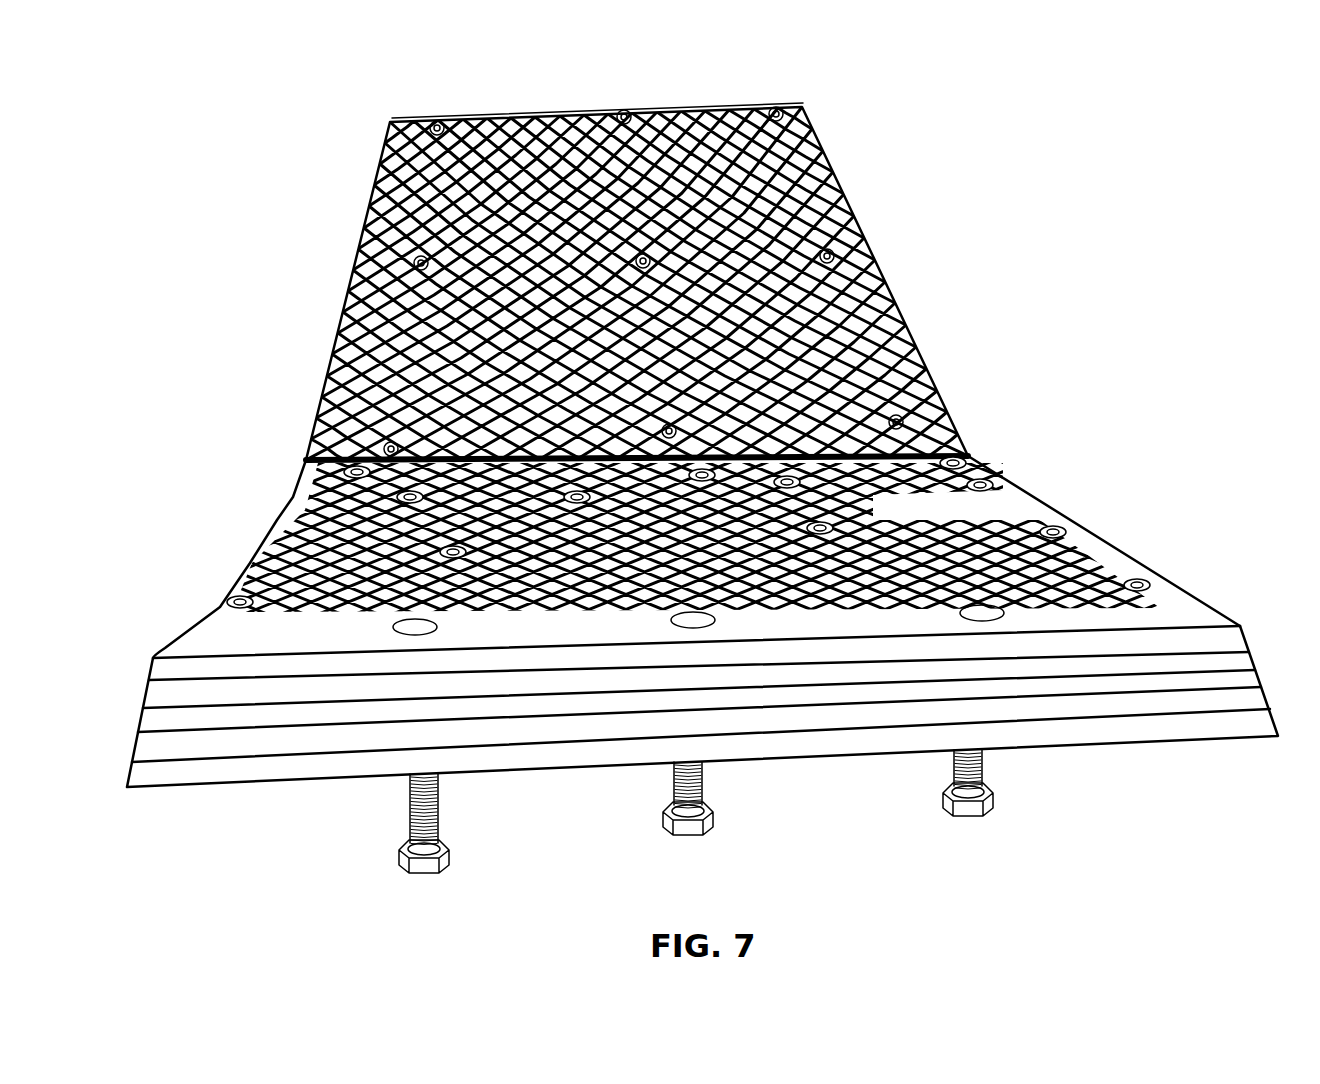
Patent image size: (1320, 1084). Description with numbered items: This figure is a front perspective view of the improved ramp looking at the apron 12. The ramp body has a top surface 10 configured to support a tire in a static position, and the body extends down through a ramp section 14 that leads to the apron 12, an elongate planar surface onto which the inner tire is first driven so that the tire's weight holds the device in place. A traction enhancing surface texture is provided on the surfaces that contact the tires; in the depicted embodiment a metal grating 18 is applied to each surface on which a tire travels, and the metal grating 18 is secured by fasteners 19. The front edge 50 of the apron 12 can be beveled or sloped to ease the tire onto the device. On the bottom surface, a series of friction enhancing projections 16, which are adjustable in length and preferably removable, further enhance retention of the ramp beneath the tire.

The top surface 10 is at (613, 187).
The apron 12 is at (216, 632).
The ramp section 14 is at (880, 296).
The friction enhancing projections 16 is at (442, 865).
The metal grating 18 is at (1027, 523).
The fasteners 19 is at (360, 238).
The front edge 50 is at (1157, 710).